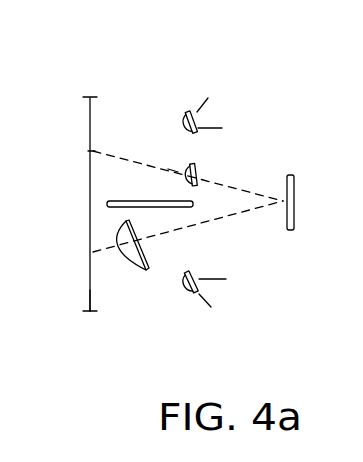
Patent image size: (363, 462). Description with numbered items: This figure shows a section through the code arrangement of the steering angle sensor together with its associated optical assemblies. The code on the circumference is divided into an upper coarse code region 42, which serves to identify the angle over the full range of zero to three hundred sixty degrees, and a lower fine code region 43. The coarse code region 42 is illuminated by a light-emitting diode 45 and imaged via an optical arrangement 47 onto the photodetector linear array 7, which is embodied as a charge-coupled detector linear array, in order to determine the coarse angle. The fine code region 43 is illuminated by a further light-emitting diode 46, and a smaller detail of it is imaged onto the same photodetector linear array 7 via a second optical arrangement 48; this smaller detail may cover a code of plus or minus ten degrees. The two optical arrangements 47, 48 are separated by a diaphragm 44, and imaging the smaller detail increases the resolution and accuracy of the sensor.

The photodetector linear array 7 is at (304, 176).
The coarse code region 42 is at (54, 172).
The fine code region 43 is at (59, 337).
The diaphragm 44 is at (129, 201).
The light-emitting diode 45 is at (188, 103).
The light-emitting diode 46 is at (202, 327).
The optical arrangement 47 is at (247, 125).
The optical arrangement 48 is at (128, 272).